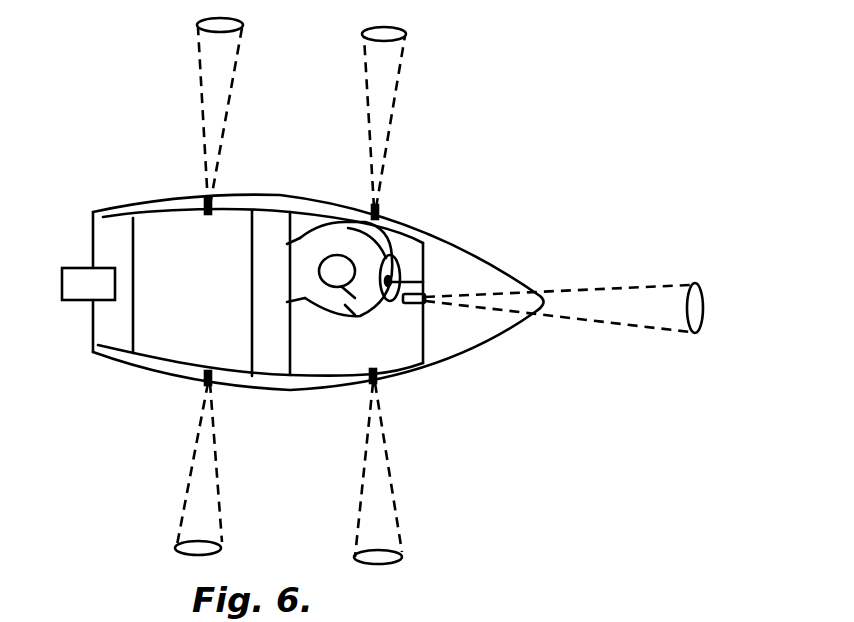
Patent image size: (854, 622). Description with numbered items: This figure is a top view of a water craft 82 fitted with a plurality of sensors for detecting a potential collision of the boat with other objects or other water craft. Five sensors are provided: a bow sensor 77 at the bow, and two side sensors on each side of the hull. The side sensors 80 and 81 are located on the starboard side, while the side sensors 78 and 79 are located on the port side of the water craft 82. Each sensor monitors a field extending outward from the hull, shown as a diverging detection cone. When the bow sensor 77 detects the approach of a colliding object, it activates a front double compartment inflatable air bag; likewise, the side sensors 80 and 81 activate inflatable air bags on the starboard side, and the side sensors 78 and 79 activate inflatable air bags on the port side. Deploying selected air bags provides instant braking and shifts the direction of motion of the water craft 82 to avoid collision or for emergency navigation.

The bow sensor 77 is at (428, 290).
The side sensor 78 is at (379, 211).
The side sensor 79 is at (205, 203).
The side sensor 80 is at (207, 383).
The side sensor 81 is at (378, 381).
The water craft 82 is at (282, 203).